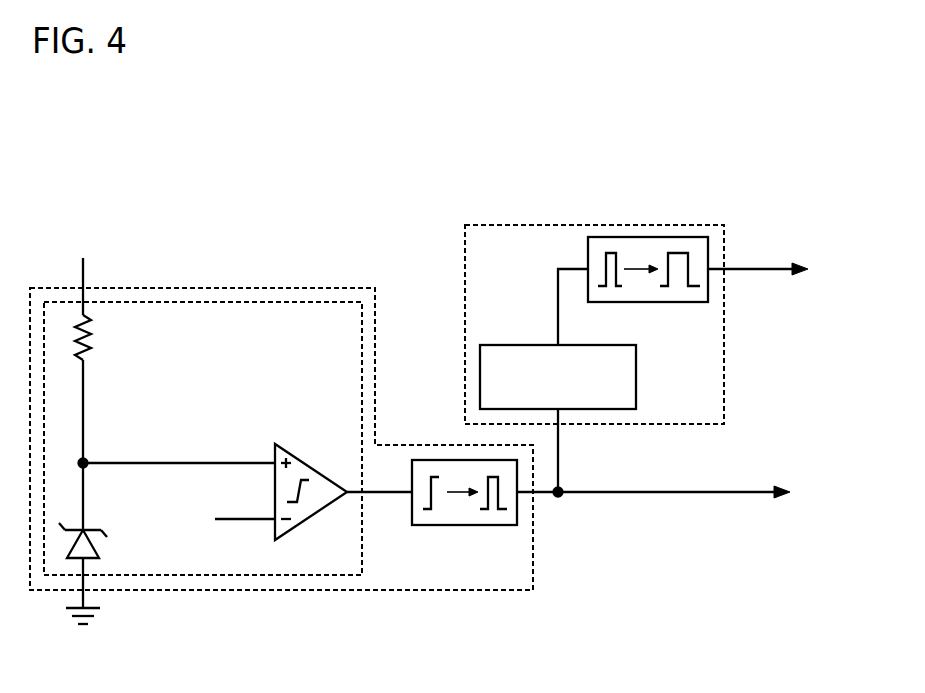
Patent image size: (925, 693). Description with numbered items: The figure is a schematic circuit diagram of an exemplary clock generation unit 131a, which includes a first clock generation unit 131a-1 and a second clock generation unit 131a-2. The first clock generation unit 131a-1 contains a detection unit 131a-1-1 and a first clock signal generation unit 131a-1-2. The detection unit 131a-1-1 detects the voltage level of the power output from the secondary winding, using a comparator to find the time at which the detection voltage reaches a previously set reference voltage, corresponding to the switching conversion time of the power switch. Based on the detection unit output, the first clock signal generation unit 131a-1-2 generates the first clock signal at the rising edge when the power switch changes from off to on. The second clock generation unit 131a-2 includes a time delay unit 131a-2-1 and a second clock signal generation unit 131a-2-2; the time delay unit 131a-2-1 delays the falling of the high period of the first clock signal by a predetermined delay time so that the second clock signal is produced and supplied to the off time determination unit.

The clock generation unit 131a is at (95, 157).
The first clock generation unit 131a-1 is at (222, 288).
The detection unit 131a-1-1 is at (258, 575).
The first clock signal generation unit 131a-1-2 is at (462, 525).
The second clock generation unit 131a-2 is at (724, 363).
The time delay unit 131a-2-1 is at (492, 345).
The second clock signal generation unit 131a-2-2 is at (652, 238).